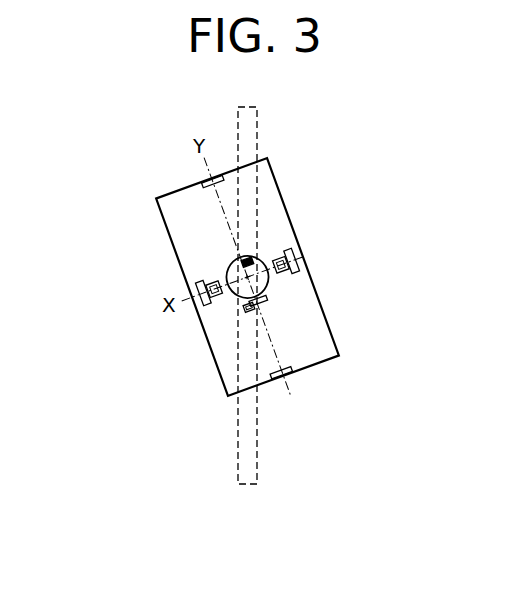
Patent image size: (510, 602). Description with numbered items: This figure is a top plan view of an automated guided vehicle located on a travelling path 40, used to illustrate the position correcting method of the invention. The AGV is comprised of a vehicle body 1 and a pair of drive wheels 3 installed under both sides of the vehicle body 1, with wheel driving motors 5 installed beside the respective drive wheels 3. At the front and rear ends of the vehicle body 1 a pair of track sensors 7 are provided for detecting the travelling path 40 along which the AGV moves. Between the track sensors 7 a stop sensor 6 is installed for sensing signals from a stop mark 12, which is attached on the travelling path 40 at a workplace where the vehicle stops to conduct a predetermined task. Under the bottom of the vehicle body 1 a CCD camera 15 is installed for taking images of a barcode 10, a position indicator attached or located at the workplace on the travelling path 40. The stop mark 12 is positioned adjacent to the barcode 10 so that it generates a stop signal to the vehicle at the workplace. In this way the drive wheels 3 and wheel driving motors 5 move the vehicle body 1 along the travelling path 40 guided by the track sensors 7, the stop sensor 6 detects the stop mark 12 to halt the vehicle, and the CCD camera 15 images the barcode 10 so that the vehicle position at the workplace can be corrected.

The vehicle body 1 is at (129, 221).
The drive wheels 3 is at (302, 263).
The wheel driving motors 5 is at (297, 258).
The stop sensor 6 is at (266, 301).
The track sensors 7 is at (204, 180).
The barcode 10 is at (257, 246).
The stop mark 12 is at (244, 310).
The CCD camera 15 is at (227, 276).
The travelling path 40 is at (252, 127).